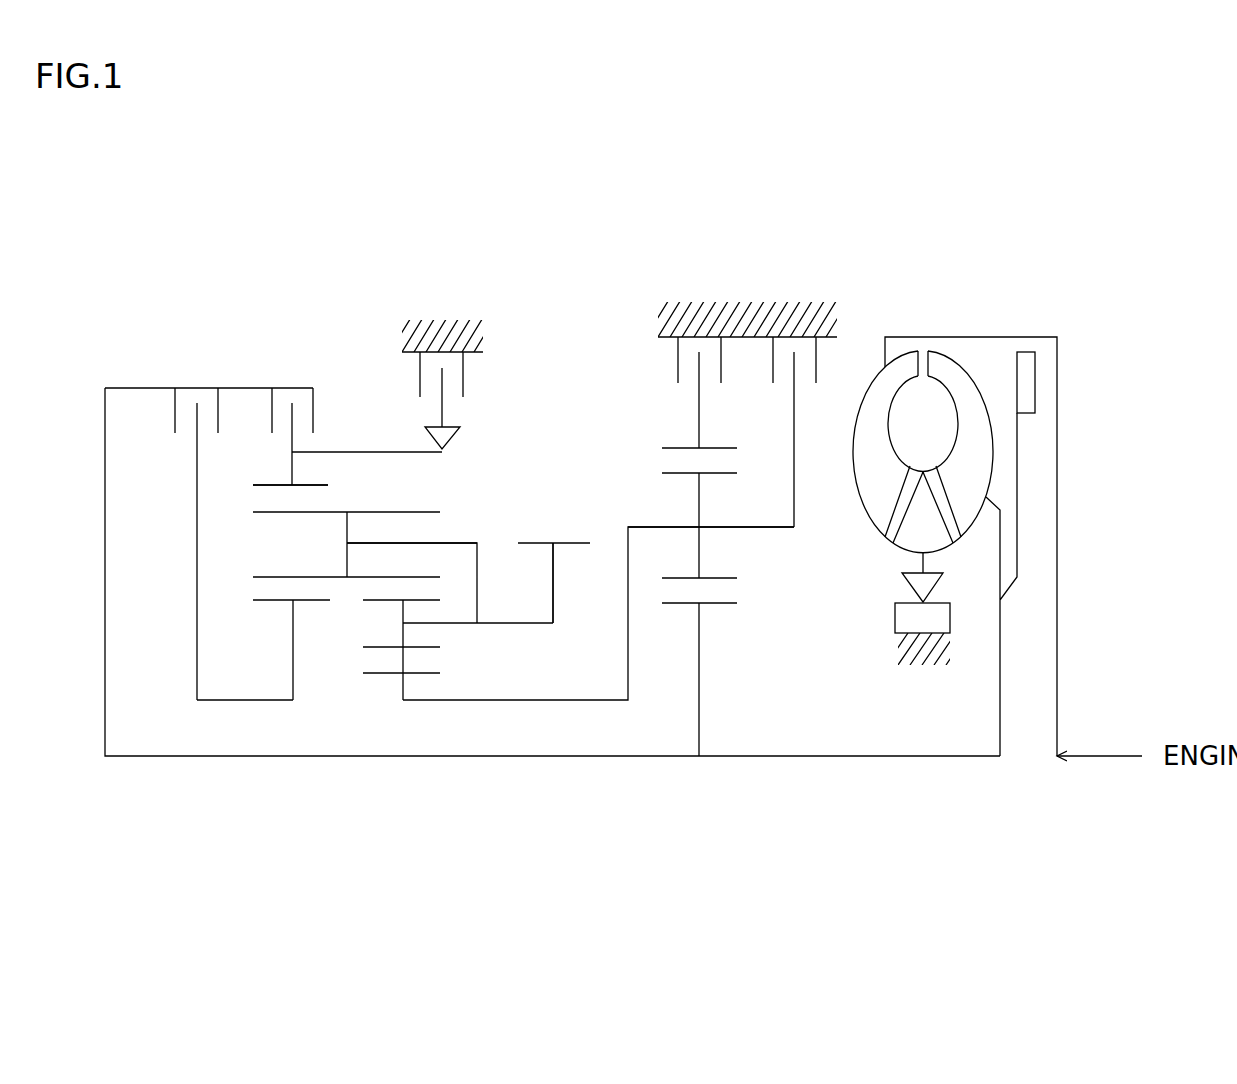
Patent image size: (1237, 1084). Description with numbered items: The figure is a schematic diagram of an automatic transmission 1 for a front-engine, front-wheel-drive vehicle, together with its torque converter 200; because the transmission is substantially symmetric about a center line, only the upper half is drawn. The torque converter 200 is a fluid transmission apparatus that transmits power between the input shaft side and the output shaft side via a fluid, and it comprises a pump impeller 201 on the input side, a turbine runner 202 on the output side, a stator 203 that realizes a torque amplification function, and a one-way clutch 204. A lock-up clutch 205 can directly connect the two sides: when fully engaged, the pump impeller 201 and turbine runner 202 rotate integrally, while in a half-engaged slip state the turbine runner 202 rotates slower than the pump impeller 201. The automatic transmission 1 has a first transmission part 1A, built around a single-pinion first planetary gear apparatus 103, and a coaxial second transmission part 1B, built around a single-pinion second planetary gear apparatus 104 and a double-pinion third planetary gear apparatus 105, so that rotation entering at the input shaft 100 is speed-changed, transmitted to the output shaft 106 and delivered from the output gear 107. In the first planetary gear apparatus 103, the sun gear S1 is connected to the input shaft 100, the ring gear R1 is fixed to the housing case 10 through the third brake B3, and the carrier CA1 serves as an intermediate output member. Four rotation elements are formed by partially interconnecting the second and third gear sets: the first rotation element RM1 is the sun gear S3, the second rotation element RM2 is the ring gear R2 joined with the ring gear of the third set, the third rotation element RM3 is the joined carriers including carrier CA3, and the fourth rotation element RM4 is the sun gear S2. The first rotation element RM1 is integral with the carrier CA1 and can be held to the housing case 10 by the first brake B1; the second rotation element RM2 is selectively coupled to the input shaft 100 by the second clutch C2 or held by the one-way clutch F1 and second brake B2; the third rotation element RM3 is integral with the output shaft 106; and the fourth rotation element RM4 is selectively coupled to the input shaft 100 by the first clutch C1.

The automatic transmission 1 is at (697, 246).
The first transmission part 1A is at (628, 350).
The second transmission part 1B is at (486, 306).
The housing case 10 is at (436, 327).
The input shaft 100 is at (855, 756).
The first planetary gear apparatus 103 is at (698, 772).
The second planetary gear apparatus 104 is at (240, 765).
The third planetary gear apparatus 105 is at (433, 765).
The output shaft 106 is at (553, 583).
The output gear 107 is at (573, 543).
The torque converter 200 is at (967, 481).
The pump impeller 201 is at (863, 500).
The turbine runner 202 is at (970, 373).
The stator 203 is at (912, 542).
The one-way clutch 204 is at (892, 625).
The lock-up clutch 205 is at (1035, 387).
The first clutch C1 is at (196, 525).
The second clutch C2 is at (292, 417).
The first brake B1 is at (813, 432).
The second brake B2 is at (465, 389).
The third brake B3 is at (680, 360).
The one-way clutch F1 is at (459, 443).
The ring gear R1 is at (715, 448).
The ring gear R2 is at (312, 486).
The sun gear S1 is at (737, 604).
The sun gear S2 is at (310, 602).
The sun gear S3 is at (382, 673).
The carrier CA1 is at (794, 482).
The carrier CA3 is at (460, 542).
The first rotation element RM1 is at (462, 702).
The second rotation element RM2 is at (343, 450).
The third rotation element RM3 is at (500, 624).
The fourth rotation element RM4 is at (293, 670).